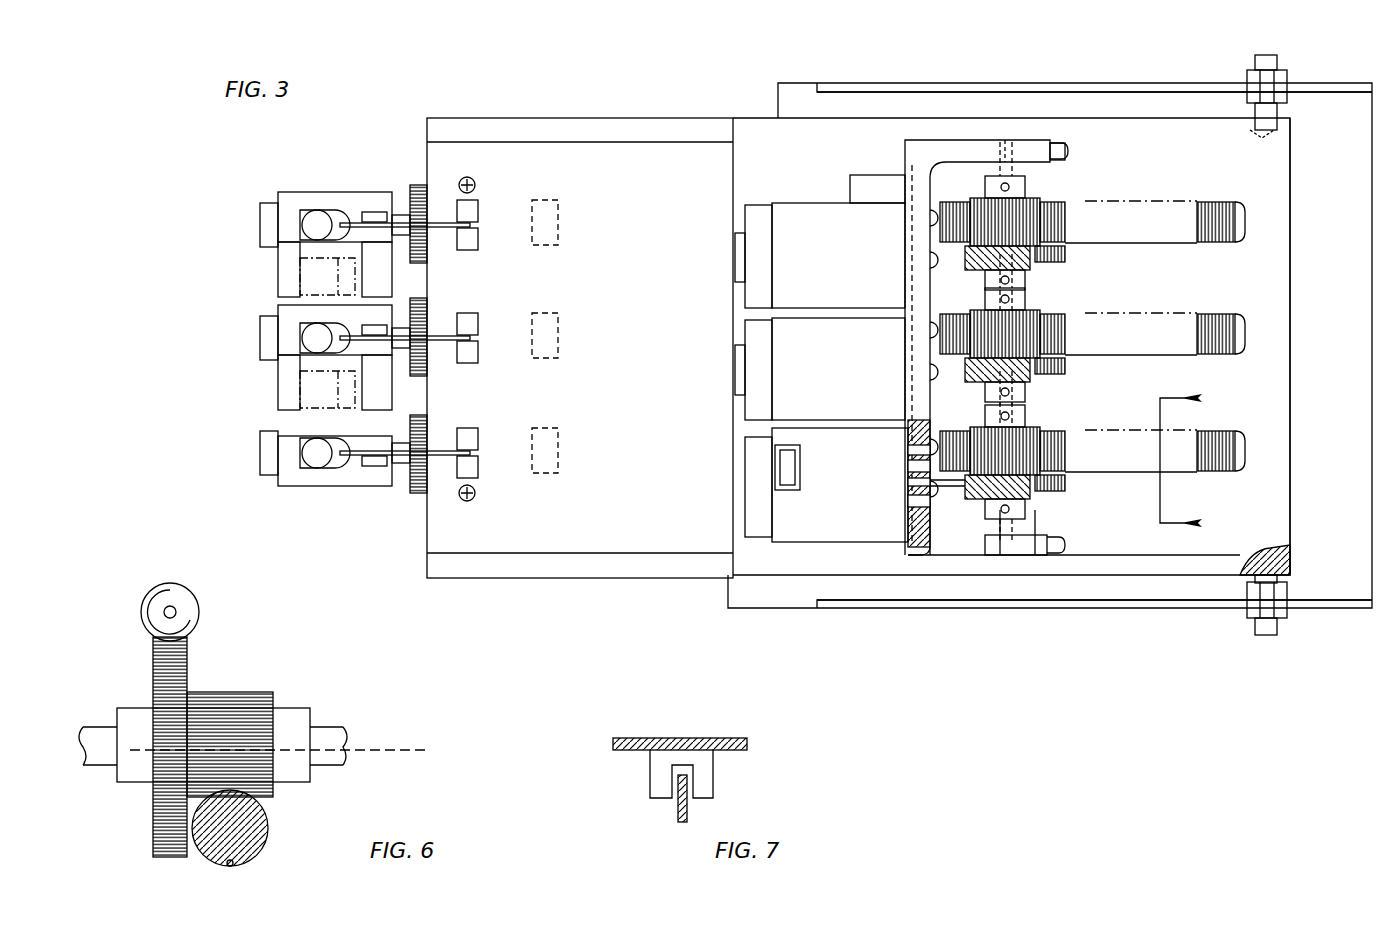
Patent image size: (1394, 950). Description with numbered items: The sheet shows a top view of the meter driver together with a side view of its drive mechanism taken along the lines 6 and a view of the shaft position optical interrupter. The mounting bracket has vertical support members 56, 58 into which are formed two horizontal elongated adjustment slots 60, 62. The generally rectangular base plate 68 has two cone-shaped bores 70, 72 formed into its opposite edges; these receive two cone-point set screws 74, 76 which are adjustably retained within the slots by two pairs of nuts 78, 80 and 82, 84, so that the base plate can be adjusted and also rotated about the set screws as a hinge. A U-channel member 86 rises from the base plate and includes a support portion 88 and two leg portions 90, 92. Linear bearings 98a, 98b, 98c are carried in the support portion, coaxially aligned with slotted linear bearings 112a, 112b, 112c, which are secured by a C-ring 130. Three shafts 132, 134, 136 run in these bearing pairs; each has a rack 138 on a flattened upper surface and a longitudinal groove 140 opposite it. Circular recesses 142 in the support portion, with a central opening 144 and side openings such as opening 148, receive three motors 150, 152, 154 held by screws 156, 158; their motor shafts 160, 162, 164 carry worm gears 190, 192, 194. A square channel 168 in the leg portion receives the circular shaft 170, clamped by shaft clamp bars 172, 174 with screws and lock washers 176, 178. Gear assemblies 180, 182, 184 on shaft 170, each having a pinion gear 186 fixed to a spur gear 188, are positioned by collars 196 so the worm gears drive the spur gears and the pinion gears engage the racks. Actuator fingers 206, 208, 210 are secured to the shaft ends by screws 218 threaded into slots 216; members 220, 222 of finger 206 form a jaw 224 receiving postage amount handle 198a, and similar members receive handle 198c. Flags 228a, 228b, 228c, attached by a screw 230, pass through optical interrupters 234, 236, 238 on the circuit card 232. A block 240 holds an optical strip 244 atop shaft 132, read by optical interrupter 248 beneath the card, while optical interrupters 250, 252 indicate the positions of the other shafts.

In FIG. 3, the vertical support member 56 is at (1372, 600).
In FIG. 3, the vertical support member 58 is at (1360, 70).
In FIG. 3, the adjustment slot 60 is at (1248, 600).
In FIG. 3, the adjustment slot 62 is at (1292, 88).
In FIG. 3, the base plate 68 is at (700, 580).
In FIG. 3, the cone-shaped bore 70 is at (1266, 548).
In FIG. 3, the cone-shaped bore 72 is at (1295, 135).
In FIG. 3, the cone-point set screw 74 is at (1262, 640).
In FIG. 3, the cone-point set screw 76 is at (1280, 52).
In FIG. 3, the nut 78 is at (1290, 610).
In FIG. 3, the nut 80 is at (1287, 590).
In FIG. 3, the nut 82 is at (1245, 118).
In FIG. 3, the nut 84 is at (1256, 62).
In FIG. 3, the U-channel member 86 is at (927, 584).
In FIG. 3, the support portion 88 is at (905, 330).
In FIG. 3, the leg portion 90 is at (960, 560).
In FIG. 3, the leg portion 92 is at (975, 140).
In FIG. 3, the linear bearing 98a is at (930, 420).
In FIG. 3, the linear bearing 98b is at (905, 305).
In FIG. 3, the linear bearing 98c is at (905, 165).
In FIG. 3, the slotted linear bearing 112a is at (410, 480).
In FIG. 3, the slotted linear bearing 112b is at (427, 300).
In FIG. 3, the slotted linear bearing 112c is at (427, 190).
In FIG. 3, the C-ring 130 is at (427, 495).
In FIG. 3, the shaft 132 is at (1248, 483).
In FIG. 6, the shaft 132 is at (268, 835).
In FIG. 3, the shaft 134 is at (1240, 357).
In FIG. 3, the shaft 136 is at (1240, 245).
In FIG. 3, the rack 138 is at (1218, 200).
In FIG. 6, the rack 138 is at (273, 790).
In FIG. 3, the groove 140 is at (908, 450).
In FIG. 6, the groove 140 is at (230, 866).
In FIG. 3, the circular recess 142 is at (905, 425).
In FIG. 3, the opening 144 is at (908, 482).
In FIG. 3, the opening 148 is at (908, 502).
In FIG. 3, the motor 150 is at (745, 440).
In FIG. 3, the motor 152 is at (745, 330).
In FIG. 3, the motor 154 is at (745, 257).
In FIG. 3, the screw 156 is at (908, 466).
In FIG. 3, the screw 158 is at (908, 550).
In FIG. 3, the motor shaft 160 is at (930, 488).
In FIG. 6, the motor shaft 160 is at (176, 612).
In FIG. 3, the motor shaft 162 is at (905, 355).
In FIG. 3, the motor shaft 164 is at (905, 242).
In FIG. 3, the square channel 168 is at (1010, 140).
In FIG. 3, the circular shaft 170 is at (1000, 560).
In FIG. 3, the shaft clamp bar 172 is at (1035, 560).
In FIG. 3, the shaft clamp bar 174 is at (1065, 160).
In FIG. 3, the screw and lock washer 176 is at (1065, 530).
In FIG. 3, the screw and lock washer 178 is at (1065, 550).
In FIG. 3, the gear assembly 180 is at (1105, 432).
In FIG. 3, the gear assembly 182 is at (1085, 322).
In FIG. 3, the gear assembly 184 is at (1090, 210).
In FIG. 3, the pinion gear 186 is at (1040, 432).
In FIG. 6, the pinion gear 186 is at (255, 692).
In FIG. 3, the spur gear 188 is at (1065, 486).
In FIG. 6, the spur gear 188 is at (153, 668).
In FIG. 3, the worm gear 190 is at (1030, 498).
In FIG. 6, the worm gear 190 is at (141, 612).
In FIG. 3, the worm gear 192 is at (1012, 405).
In FIG. 3, the worm gear 194 is at (1025, 272).
In FIG. 3, the collar 196 is at (1025, 512).
In FIG. 6, the collar 196 is at (127, 782).
In FIG. 3, the postage amount handle 198a is at (300, 405).
In FIG. 3, the postage amount handle 198c is at (300, 278).
In FIG. 3, the actuator finger 206 is at (278, 480).
In FIG. 3, the actuator finger 208 is at (278, 320).
In FIG. 3, the actuator finger 210 is at (280, 192).
In FIG. 3, the elongated slot 216 is at (278, 450).
In FIG. 3, the screw 218 is at (320, 470).
In FIG. 3, the member 220 is at (305, 387).
In FIG. 3, the member 222 is at (345, 400).
In FIG. 3, the jaw 224 is at (285, 372).
In FIG. 3, the flag 228a is at (478, 445).
In FIG. 3, the flag 228b is at (457, 330).
In FIG. 3, the flag 228c is at (457, 215).
In FIG. 7, the screw 230 is at (700, 738).
In FIG. 3, the circuit card 232 is at (614, 570).
In FIG. 3, the optical interrupter 234 is at (478, 475).
In FIG. 3, the optical interrupter 236 is at (478, 320).
In FIG. 3, the optical interrupter 238 is at (478, 210).
In FIG. 3, the block 240 is at (775, 468).
In FIG. 7, the optical strip 244 is at (678, 815).
In FIG. 3, the optical interrupter 248 is at (552, 428).
In FIG. 7, the optical interrupter 248 is at (650, 790).
In FIG. 3, the optical interrupter 250 is at (552, 313).
In FIG. 3, the optical interrupter 252 is at (552, 200).
In FIG. 3, the section line 6 is at (1189, 463).